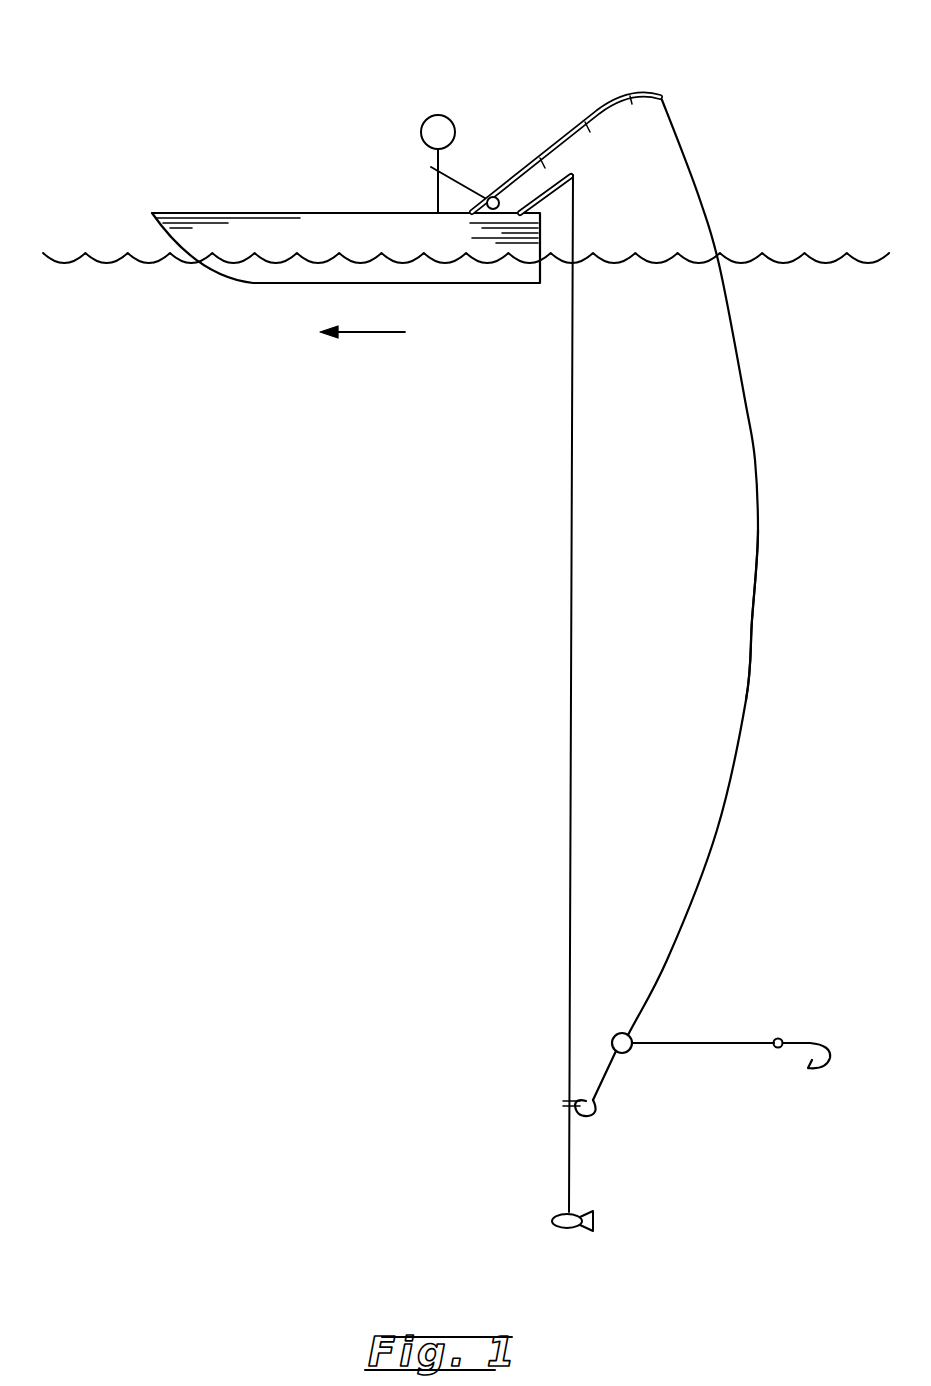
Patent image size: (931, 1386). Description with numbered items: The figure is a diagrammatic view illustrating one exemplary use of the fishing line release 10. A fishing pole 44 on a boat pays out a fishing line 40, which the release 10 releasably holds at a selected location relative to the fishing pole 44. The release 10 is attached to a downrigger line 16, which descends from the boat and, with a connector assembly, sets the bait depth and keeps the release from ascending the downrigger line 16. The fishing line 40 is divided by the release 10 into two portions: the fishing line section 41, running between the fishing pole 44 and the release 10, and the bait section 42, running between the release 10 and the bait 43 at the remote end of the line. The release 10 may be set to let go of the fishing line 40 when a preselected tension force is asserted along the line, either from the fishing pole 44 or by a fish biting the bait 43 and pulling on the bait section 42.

The fishing line release 10 is at (632, 1068).
The downrigger line 16 is at (572, 765).
The fishing line 40 is at (759, 533).
The fishing line section 41 is at (748, 660).
The bait section 42 is at (703, 1045).
The bait 43 is at (798, 1040).
The fishing pole 44 is at (640, 95).